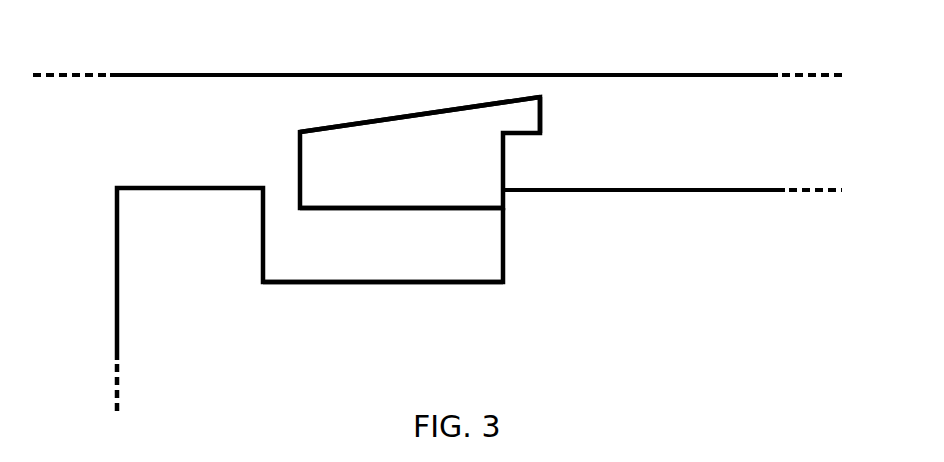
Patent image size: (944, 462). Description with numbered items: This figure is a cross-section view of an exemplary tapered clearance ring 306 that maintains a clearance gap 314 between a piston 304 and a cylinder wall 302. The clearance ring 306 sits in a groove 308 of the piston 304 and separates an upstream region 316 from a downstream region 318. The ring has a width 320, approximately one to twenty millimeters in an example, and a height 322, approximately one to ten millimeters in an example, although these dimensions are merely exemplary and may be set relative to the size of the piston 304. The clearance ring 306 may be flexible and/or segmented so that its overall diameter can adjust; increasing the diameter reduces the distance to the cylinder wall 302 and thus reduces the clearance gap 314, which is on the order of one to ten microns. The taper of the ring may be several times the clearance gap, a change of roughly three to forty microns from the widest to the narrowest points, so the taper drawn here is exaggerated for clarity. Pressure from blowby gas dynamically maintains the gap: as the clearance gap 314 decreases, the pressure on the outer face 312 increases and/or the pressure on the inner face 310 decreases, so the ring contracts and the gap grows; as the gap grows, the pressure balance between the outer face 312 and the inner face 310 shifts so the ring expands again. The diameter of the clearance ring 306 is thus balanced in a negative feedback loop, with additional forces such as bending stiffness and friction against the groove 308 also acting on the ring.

The cylinder wall 302 is at (188, 75).
The piston 304 is at (117, 245).
The tapered clearance ring 306 is at (300, 150).
The groove 308 is at (410, 285).
The inner face 310 is at (377, 210).
The outer face 312 is at (410, 114).
The clearance gap 314 is at (556, 91).
The upstream region 316 is at (152, 149).
The downstream region 318 is at (778, 148).
The width 320 is at (501, 188).
The height 322 is at (466, 111).